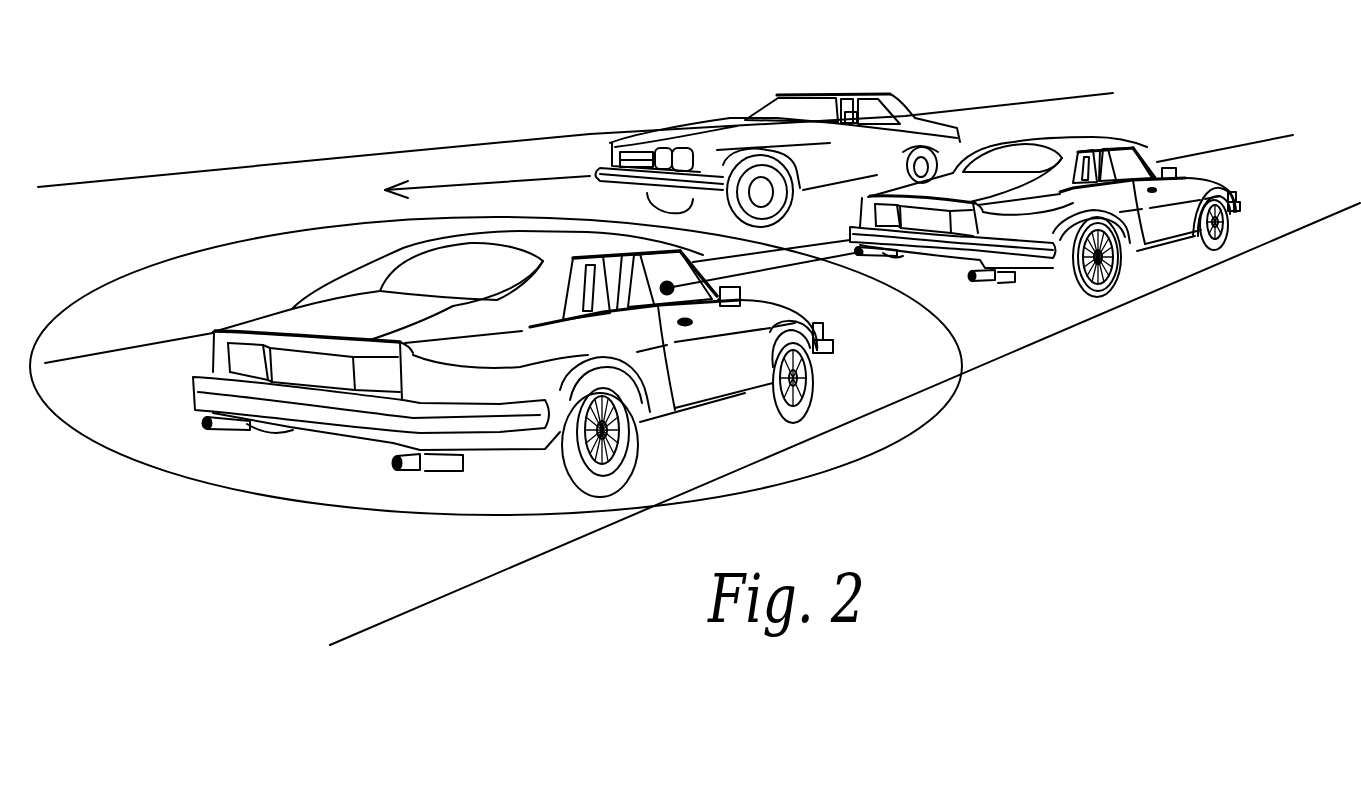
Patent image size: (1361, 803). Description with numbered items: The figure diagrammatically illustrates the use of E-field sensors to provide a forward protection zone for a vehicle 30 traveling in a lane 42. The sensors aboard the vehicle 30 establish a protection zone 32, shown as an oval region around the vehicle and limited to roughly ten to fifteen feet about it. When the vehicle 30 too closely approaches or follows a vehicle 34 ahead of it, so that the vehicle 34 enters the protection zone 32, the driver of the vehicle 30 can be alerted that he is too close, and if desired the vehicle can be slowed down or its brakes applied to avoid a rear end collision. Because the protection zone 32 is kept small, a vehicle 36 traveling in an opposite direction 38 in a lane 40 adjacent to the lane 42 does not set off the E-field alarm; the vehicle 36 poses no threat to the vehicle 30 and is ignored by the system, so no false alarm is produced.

The vehicle 30 is at (697, 388).
The protection zone 32 is at (957, 388).
The vehicle 34 is at (1152, 232).
The vehicle 36 is at (780, 127).
The opposite direction 38 is at (496, 178).
The lane 40 is at (198, 225).
The lane 42 is at (1314, 195).